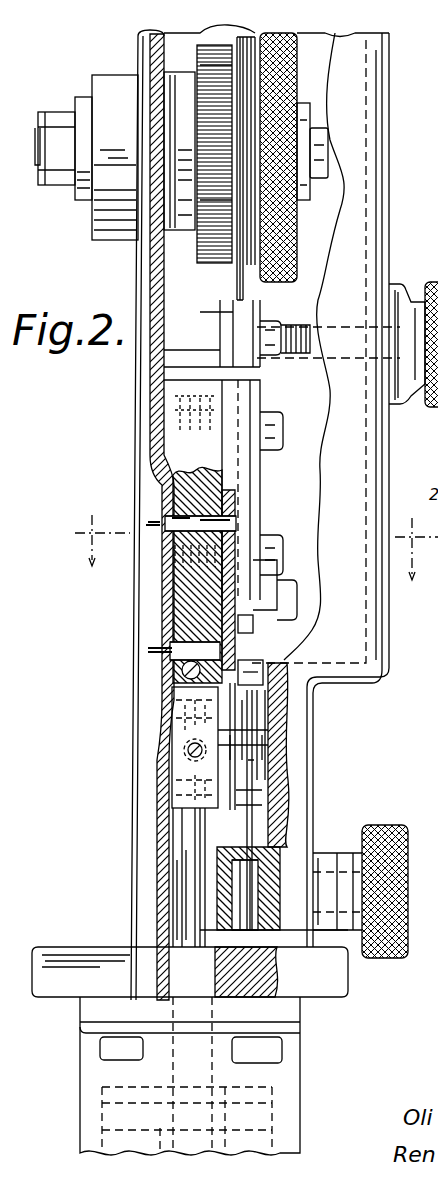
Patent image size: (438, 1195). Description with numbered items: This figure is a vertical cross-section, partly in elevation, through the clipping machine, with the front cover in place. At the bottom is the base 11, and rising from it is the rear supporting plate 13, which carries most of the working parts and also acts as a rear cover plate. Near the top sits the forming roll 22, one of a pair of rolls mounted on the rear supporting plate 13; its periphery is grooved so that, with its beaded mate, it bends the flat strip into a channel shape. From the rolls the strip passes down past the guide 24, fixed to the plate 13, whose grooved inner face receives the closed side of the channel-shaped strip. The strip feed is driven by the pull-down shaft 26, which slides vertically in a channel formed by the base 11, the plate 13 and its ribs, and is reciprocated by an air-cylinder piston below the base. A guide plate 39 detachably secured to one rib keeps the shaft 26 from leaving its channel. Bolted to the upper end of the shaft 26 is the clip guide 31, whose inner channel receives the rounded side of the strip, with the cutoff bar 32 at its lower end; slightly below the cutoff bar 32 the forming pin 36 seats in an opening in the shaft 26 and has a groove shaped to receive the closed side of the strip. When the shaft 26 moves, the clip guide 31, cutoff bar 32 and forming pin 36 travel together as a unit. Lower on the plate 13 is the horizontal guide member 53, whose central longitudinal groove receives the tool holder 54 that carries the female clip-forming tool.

The base 11 is at (348, 985).
The rear supporting plate 13 is at (135, 462).
The forming roll 22 is at (253, 26).
The guide 24 is at (258, 302).
The pull-down shaft 26 is at (188, 850).
The clip guide 31 is at (260, 403).
The cutoff bar 32 is at (243, 622).
The forming pin 36 is at (255, 667).
The guide plate 39 is at (185, 585).
The guide member 53 is at (283, 860).
The tool holder 54 is at (277, 828).